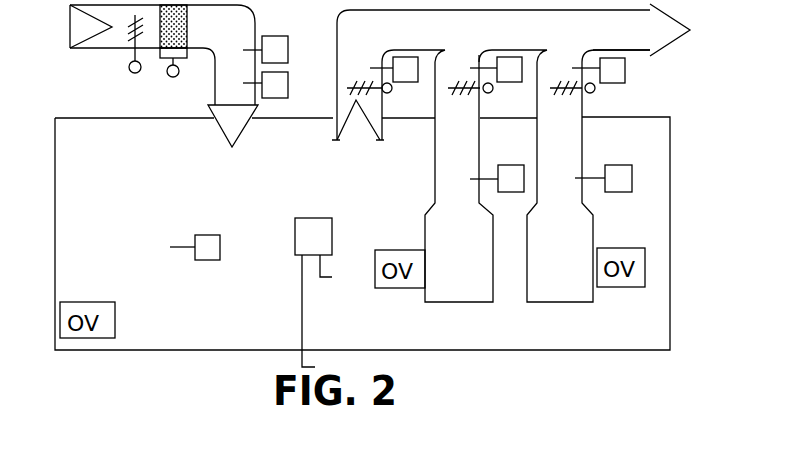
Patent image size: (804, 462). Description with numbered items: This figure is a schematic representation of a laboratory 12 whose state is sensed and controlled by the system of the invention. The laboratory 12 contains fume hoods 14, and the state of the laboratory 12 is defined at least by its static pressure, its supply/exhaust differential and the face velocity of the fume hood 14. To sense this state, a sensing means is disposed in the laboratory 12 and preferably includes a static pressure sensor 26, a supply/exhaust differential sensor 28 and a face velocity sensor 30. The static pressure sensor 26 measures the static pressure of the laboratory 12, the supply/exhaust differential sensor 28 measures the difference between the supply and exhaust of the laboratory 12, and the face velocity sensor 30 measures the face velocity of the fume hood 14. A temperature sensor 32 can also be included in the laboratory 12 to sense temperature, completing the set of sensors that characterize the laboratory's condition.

The laboratory 12 is at (662, 165).
The fume hood 14 is at (427, 207).
The static pressure sensor 26 is at (310, 218).
The supply/exhaust differential sensor 28 is at (288, 76).
The face velocity sensor 30 is at (519, 150).
The temperature sensor 32 is at (287, 50).